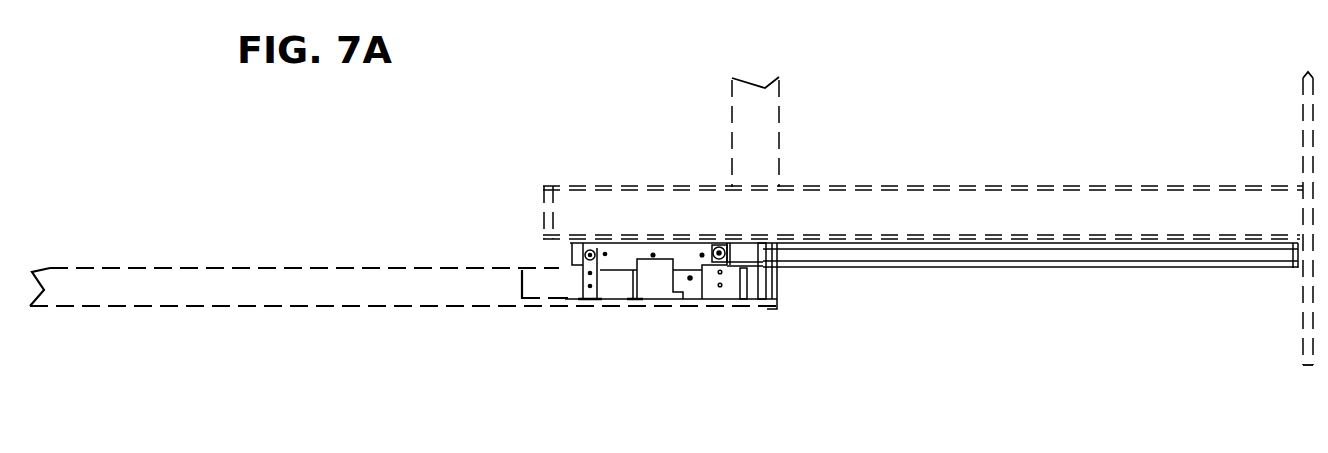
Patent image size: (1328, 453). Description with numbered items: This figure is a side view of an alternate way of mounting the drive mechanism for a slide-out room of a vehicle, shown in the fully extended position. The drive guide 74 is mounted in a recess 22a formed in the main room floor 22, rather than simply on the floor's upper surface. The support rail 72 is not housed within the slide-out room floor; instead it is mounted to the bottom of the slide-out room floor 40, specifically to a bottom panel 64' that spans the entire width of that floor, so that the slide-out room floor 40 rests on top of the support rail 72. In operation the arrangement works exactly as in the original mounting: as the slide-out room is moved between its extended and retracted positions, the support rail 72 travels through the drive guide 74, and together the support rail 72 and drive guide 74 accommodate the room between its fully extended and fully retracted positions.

The main room floor 22 is at (333, 268).
The recess 22a is at (547, 297).
The floor 40 is at (960, 187).
The bottom panel 64' is at (1030, 173).
The support rail 72 is at (873, 250).
The drive guide 74 is at (683, 290).